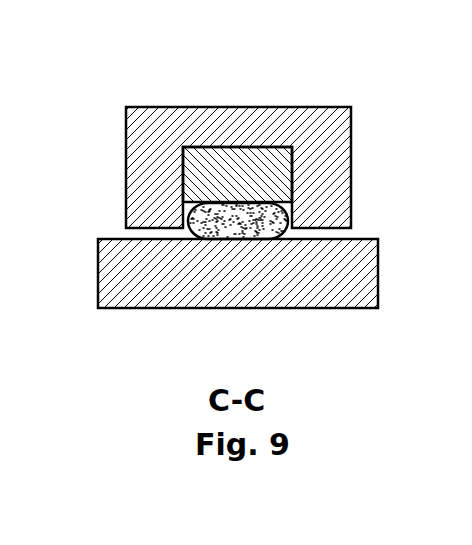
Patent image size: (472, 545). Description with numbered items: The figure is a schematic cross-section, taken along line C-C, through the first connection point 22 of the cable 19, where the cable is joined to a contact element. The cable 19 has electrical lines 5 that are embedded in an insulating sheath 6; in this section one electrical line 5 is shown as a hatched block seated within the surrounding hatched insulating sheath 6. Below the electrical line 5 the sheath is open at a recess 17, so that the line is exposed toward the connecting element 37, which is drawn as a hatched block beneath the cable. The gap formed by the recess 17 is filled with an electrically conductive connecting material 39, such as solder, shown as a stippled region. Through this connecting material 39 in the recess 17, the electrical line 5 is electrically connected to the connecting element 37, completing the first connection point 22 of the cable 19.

The electrical line 5 is at (260, 153).
The insulating sheath 6 is at (142, 133).
The recess 17 is at (222, 250).
The cable 19 is at (74, 231).
The first connection point 22 is at (370, 40).
The connecting element 37 is at (362, 275).
The electrically conductive connecting material 39 is at (260, 238).